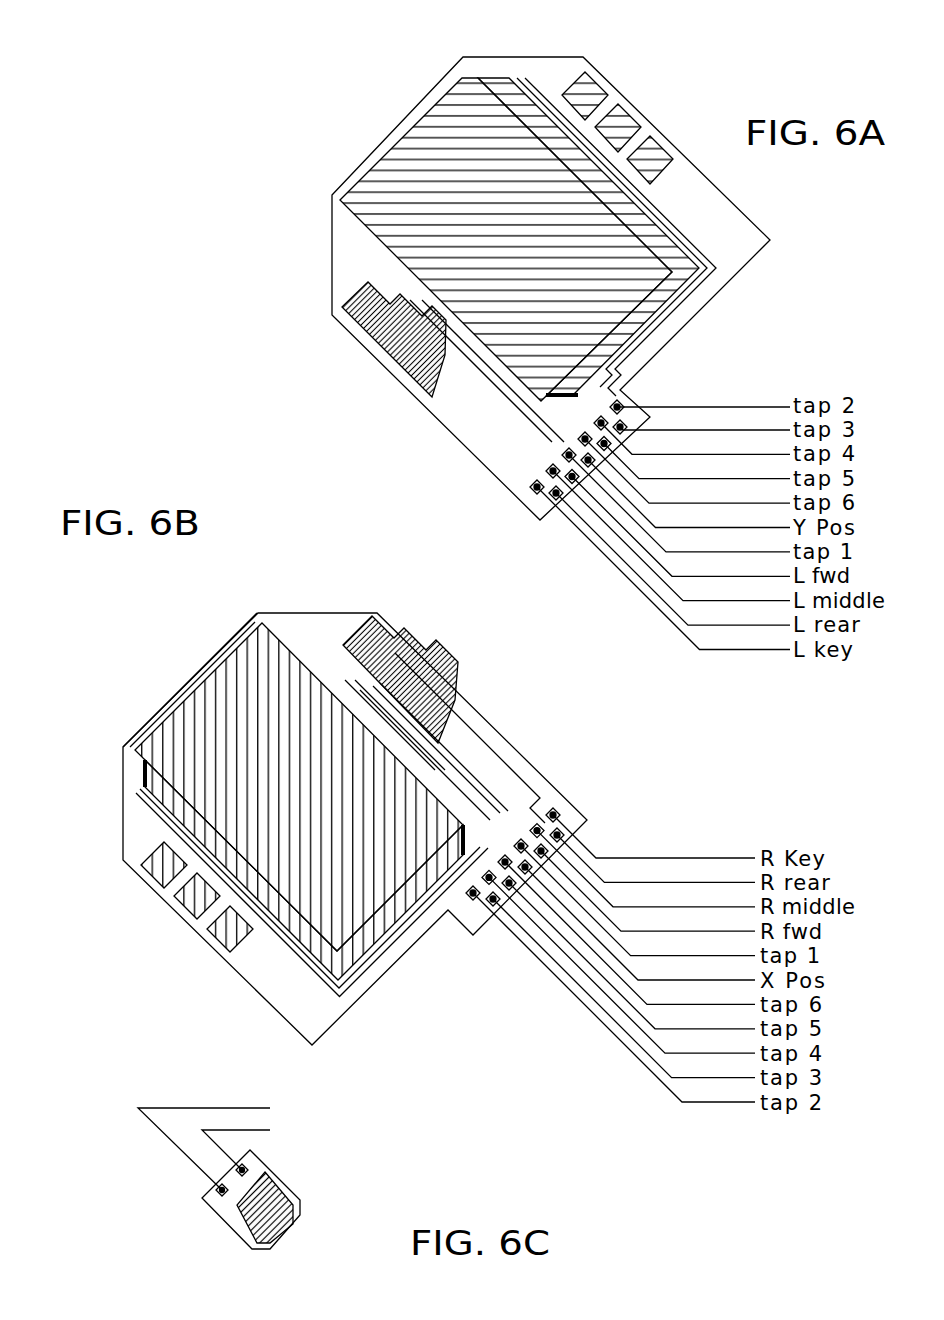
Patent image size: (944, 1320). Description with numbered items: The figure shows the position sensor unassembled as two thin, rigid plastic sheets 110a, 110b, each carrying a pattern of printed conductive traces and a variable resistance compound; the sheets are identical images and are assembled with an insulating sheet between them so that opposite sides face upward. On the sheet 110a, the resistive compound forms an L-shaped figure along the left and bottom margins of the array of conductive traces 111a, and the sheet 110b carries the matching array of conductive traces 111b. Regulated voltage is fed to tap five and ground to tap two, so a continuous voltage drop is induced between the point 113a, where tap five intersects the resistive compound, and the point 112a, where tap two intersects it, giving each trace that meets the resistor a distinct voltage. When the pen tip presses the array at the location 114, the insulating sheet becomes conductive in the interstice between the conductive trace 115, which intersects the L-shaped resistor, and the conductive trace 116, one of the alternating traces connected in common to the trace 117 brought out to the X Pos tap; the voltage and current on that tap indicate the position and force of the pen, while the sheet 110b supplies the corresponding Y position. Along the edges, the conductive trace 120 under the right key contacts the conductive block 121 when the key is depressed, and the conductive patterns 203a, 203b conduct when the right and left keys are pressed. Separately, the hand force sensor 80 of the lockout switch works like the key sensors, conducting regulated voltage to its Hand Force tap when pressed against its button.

In FIG. 6B, the plastic sheet 110a is at (348, 1017).
In FIG. 6A, the plastic sheet 110b is at (565, 57).
In FIG. 6B, the array of conductive traces 111a is at (181, 670).
In FIG. 6A, the sensor panel (Y layer) 111b is at (400, 117).
In FIG. 6B, the tap 2 intersection with resistive compound 112a is at (185, 823).
In FIG. 6B, the tap 5 intersection with resistive compound 113a is at (432, 893).
In FIG. 6B, the pressure point 114 is at (220, 738).
In FIG. 6B, the conductive trace 115 is at (312, 933).
In FIG. 6B, the conductive trace 116 is at (300, 670).
In FIG. 6B, the common trace 117 is at (233, 630).
In FIG. 6B, the conductive trace pattern 120 is at (437, 630).
In FIG. 6A, the conductive block 121 is at (627, 123).
In FIG. 6B, the conductive pattern 203a is at (460, 720).
In FIG. 6A, the conductive pattern 203b is at (450, 385).
In FIG. 6C, the hand force sensor 80 is at (290, 1247).